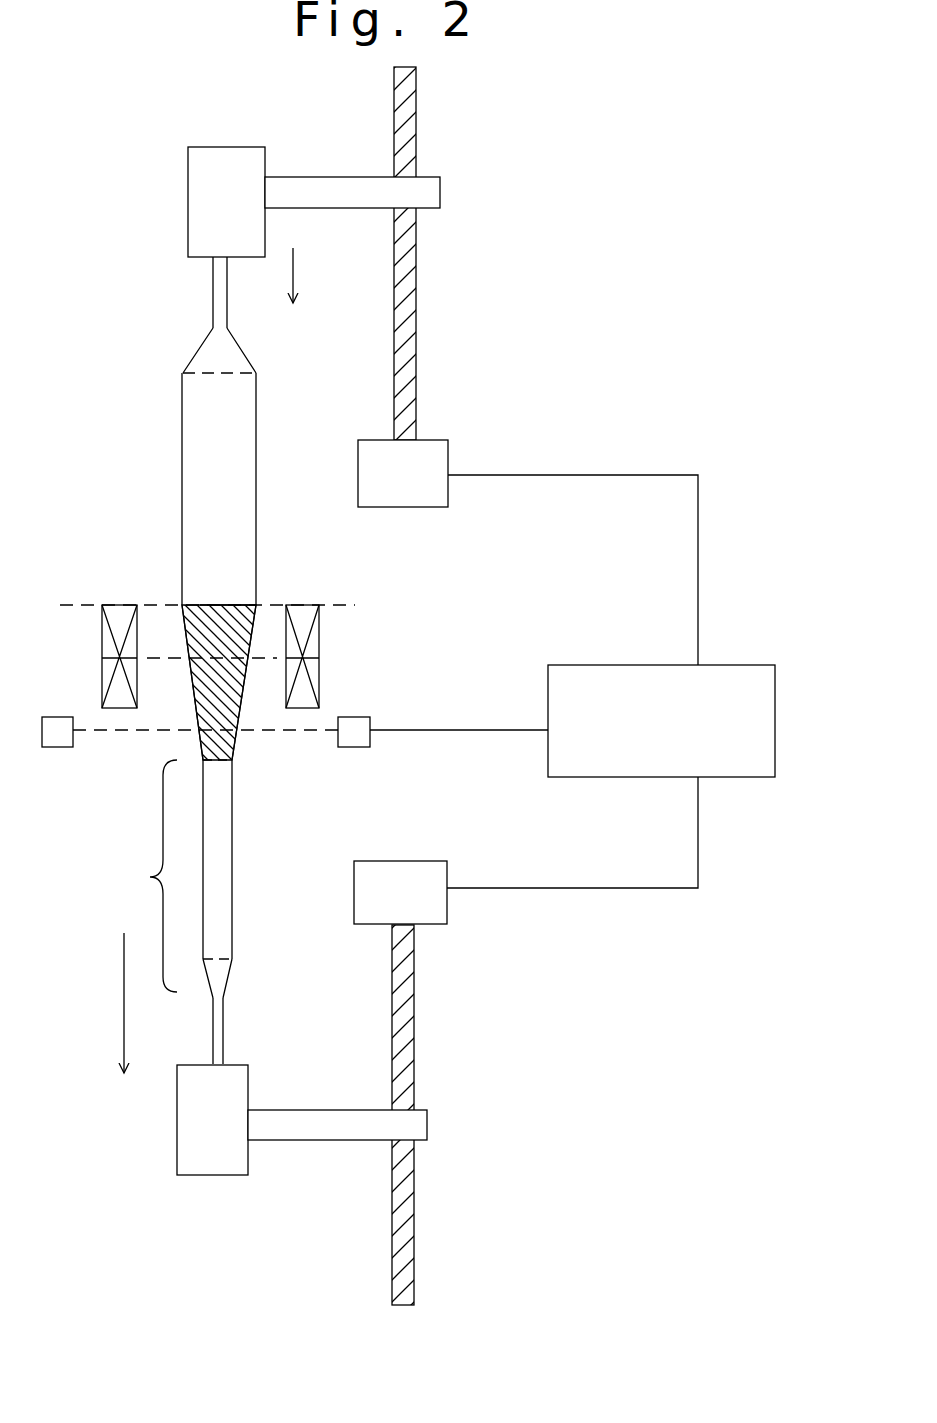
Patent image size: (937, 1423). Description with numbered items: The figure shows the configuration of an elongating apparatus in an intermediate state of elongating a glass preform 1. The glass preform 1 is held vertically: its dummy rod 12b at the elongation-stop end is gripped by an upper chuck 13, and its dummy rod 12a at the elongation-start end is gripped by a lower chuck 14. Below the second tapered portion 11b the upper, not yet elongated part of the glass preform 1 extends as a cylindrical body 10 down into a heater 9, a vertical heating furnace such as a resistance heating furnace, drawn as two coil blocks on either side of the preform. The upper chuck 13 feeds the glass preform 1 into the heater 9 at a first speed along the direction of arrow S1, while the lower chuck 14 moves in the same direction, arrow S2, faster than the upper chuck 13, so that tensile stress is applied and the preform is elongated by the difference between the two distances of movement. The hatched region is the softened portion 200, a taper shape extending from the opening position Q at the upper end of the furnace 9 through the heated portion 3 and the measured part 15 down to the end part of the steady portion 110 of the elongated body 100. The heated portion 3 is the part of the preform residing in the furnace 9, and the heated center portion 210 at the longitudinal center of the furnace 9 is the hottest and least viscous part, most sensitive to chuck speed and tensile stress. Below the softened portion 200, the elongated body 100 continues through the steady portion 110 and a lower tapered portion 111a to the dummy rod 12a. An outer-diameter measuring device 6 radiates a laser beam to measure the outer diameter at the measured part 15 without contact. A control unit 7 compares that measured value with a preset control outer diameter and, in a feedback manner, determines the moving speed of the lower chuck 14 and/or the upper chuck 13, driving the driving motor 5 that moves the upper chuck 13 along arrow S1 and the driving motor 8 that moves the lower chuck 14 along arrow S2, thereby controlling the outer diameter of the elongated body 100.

The glass preform 1 is at (270, 428).
The heated portion 3 is at (176, 610).
The driving motor 5 is at (420, 458).
The outer-diameter measuring device 6 is at (352, 720).
The control unit 7 is at (568, 665).
The driving motor 8 is at (432, 912).
The heater 9 is at (100, 634).
The upper polycrystalline rod portion 10 is at (195, 460).
The upper chuck 13 is at (207, 173).
The lower chuck 14 is at (196, 1155).
The measured part 15 is at (237, 725).
The elongated body 100 is at (136, 876).
The steady portion 110 is at (218, 862).
The softened portion 200 is at (222, 620).
The heated center portion 210 is at (213, 637).
The second tapered portion 11b is at (205, 362).
The dummy rod 12b is at (213, 292).
The lower cone portion 111a is at (218, 975).
The dummy rod 12a is at (217, 1035).
The opening position Q is at (195, 602).
The arrow S1 is at (297, 266).
The arrow S2 is at (122, 997).